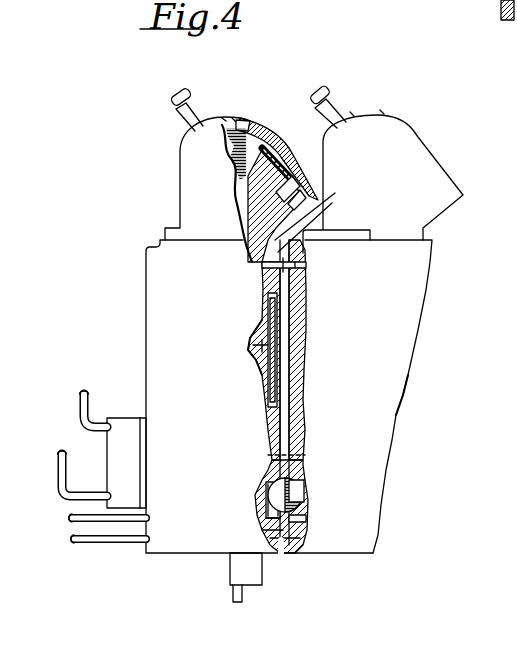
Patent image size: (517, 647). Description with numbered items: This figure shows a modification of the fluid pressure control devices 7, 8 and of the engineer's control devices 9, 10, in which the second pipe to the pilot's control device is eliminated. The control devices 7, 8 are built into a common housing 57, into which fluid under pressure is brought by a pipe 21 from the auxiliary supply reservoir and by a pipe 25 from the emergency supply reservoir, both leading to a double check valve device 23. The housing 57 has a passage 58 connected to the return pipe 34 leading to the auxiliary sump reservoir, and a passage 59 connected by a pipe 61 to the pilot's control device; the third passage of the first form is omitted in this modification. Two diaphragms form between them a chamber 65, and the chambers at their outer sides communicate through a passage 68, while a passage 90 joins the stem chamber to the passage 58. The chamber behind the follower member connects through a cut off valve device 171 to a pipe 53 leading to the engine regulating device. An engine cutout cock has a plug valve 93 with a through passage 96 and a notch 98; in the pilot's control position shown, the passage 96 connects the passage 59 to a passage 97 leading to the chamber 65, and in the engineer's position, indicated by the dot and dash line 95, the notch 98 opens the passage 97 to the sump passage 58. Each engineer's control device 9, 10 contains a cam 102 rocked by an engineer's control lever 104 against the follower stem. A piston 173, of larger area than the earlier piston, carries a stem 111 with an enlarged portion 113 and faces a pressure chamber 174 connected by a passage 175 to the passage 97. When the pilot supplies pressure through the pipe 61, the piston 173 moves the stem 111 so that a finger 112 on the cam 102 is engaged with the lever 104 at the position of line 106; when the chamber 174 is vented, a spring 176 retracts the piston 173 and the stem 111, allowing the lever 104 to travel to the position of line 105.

The fluid pressure control device 7 is at (152, 280).
The fluid pressure control device 8 is at (420, 280).
The engineer's control device 9 is at (188, 192).
The engineer's control device 10 is at (433, 168).
The pipe 21 is at (80, 398).
The double check valve device 23 is at (107, 466).
The pipe 25 is at (58, 465).
The pipe 34 is at (68, 518).
The pipe 53 is at (234, 598).
The housing 57 is at (395, 367).
The passage 58 is at (275, 518).
The passage 59 is at (277, 537).
The pipe 61 is at (70, 540).
The chamber 65 is at (253, 345).
The passage 68 is at (277, 310).
The passage 90 is at (303, 265).
The plug valve 93 is at (268, 497).
The dot and dash line 95 is at (297, 493).
The through passage 96 is at (300, 517).
The passage 97 is at (288, 387).
The notch 98 is at (303, 503).
The cam 102 is at (232, 155).
The engineer's control lever 104 is at (172, 93).
The line 105 is at (232, 118).
The line 106 is at (222, 118).
The stem 111 is at (248, 140).
The finger 112 is at (235, 112).
The enlarged portion 113 is at (272, 158).
The cut off valve device 171 is at (232, 568).
The piston 173 is at (296, 182).
The pressure chamber 174 is at (297, 190).
The passage 175 is at (288, 295).
The spring 176 is at (282, 174).